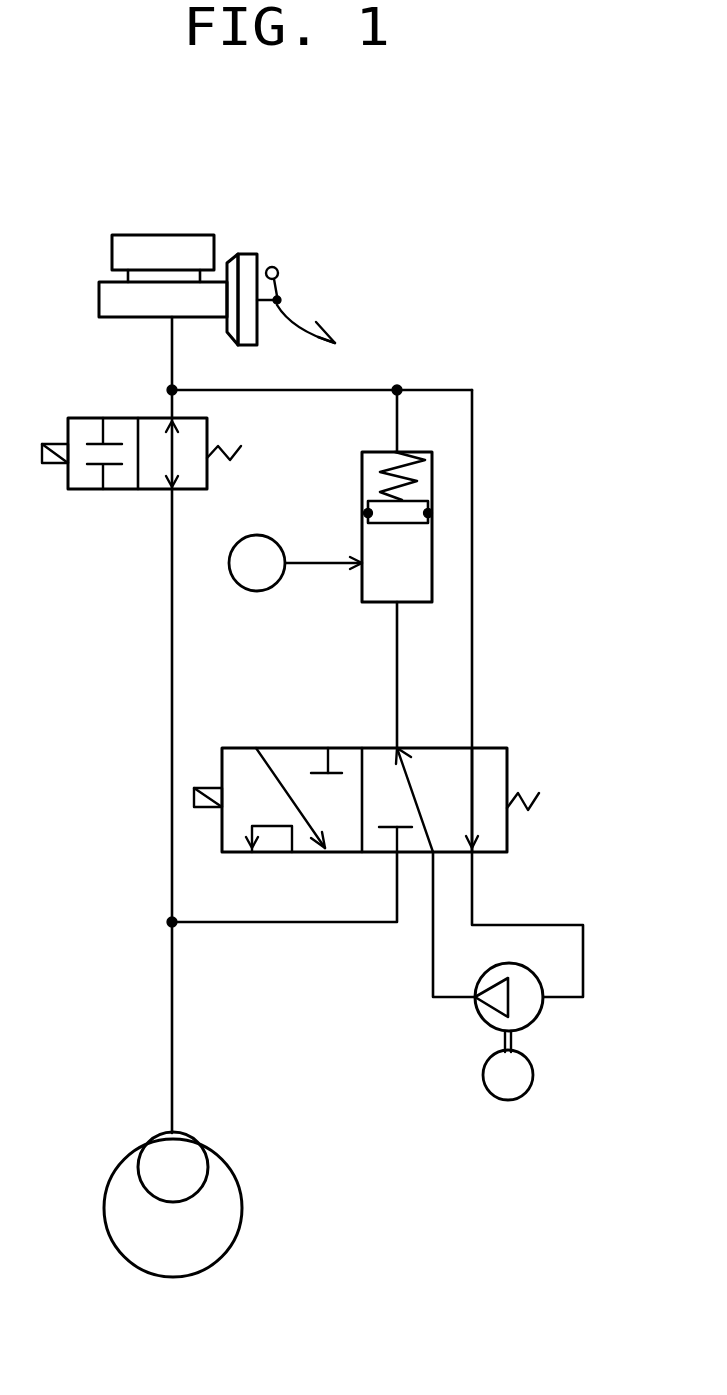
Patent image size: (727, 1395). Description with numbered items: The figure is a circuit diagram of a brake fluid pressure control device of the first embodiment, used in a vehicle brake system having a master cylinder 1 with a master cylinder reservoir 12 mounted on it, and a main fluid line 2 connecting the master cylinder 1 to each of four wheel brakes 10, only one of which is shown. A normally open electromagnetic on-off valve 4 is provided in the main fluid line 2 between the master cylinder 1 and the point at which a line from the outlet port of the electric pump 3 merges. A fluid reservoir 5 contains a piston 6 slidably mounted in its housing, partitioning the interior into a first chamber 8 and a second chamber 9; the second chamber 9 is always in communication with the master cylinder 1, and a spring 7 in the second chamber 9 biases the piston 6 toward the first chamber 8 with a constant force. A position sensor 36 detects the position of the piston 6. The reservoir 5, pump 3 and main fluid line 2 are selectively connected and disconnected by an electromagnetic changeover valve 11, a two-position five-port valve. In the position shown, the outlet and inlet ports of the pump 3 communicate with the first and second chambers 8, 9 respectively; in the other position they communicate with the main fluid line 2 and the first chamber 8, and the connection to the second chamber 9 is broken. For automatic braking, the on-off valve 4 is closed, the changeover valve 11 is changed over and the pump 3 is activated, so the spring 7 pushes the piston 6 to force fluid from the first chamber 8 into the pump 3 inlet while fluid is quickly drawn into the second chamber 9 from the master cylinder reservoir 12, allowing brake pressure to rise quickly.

The master cylinder 1 is at (112, 297).
The master cylinder reservoir 12 is at (178, 245).
The main fluid line 2 is at (172, 598).
The electromagnetic on-off valve 4 is at (90, 425).
The fluid reservoir 5 is at (360, 536).
The second chamber 9 is at (423, 462).
The spring 7 is at (383, 470).
The piston 6 is at (384, 513).
The first chamber 8 is at (378, 585).
The position sensor 36 is at (253, 591).
The electromagnetic changeover valve 11 is at (495, 762).
The electric pump 3 is at (530, 1022).
The wheel brake 10 is at (193, 1153).